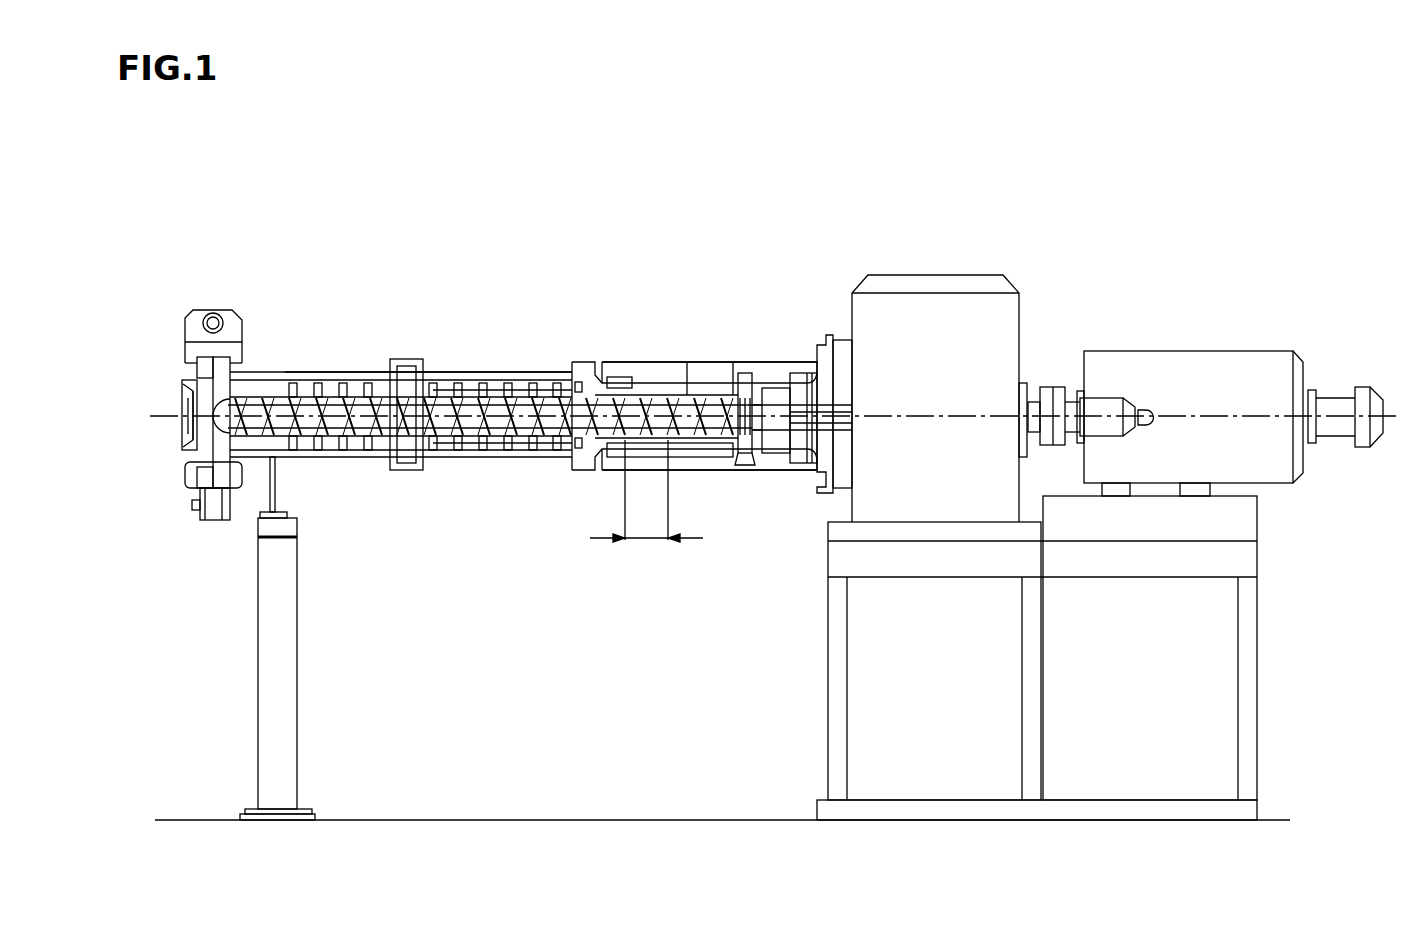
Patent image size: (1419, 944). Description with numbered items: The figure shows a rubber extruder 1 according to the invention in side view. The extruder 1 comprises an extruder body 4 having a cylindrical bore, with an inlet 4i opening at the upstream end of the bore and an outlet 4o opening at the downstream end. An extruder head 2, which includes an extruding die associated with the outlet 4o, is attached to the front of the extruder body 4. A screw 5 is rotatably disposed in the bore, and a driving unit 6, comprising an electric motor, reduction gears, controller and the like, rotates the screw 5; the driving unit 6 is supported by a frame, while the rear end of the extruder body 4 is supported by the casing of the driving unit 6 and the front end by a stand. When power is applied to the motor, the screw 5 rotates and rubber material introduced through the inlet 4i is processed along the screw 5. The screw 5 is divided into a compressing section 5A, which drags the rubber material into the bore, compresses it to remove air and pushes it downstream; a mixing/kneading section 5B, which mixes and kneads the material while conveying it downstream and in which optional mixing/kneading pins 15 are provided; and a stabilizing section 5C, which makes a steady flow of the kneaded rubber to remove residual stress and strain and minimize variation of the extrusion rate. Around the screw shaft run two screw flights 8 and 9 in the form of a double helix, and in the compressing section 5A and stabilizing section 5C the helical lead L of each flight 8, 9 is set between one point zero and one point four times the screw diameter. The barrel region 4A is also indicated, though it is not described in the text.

The extruder 1 is at (824, 255).
The extruder head 2 is at (180, 393).
The extruder body 4 is at (365, 378).
The barrel heating portion 4A is at (518, 386).
The inlet 4i is at (708, 368).
The outlet 4o is at (199, 428).
The screw 5 is at (335, 398).
The compressing section 5A is at (595, 370).
The mixing/kneading section 5B is at (285, 370).
The stabilizing section 5C is at (280, 370).
The driving unit 6 is at (1002, 327).
The screw flight 8 is at (660, 386).
The screw flight 9 is at (640, 398).
The mixing/kneading pins 15 is at (455, 380).
The helical lead L is at (646, 491).